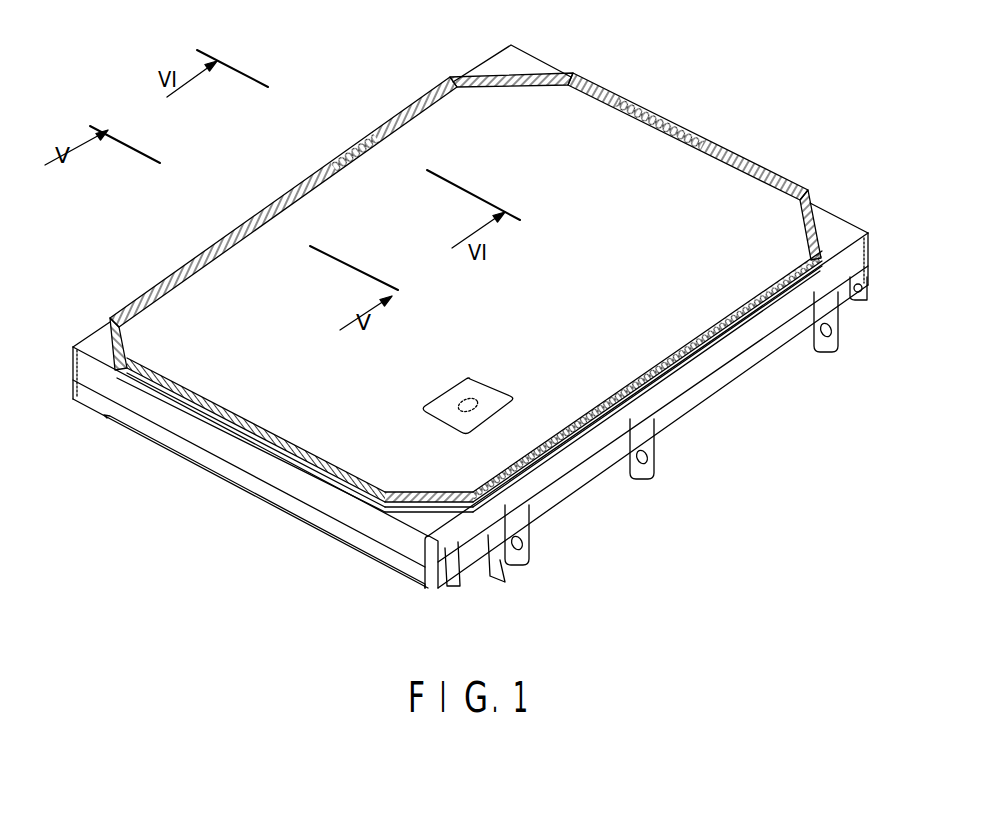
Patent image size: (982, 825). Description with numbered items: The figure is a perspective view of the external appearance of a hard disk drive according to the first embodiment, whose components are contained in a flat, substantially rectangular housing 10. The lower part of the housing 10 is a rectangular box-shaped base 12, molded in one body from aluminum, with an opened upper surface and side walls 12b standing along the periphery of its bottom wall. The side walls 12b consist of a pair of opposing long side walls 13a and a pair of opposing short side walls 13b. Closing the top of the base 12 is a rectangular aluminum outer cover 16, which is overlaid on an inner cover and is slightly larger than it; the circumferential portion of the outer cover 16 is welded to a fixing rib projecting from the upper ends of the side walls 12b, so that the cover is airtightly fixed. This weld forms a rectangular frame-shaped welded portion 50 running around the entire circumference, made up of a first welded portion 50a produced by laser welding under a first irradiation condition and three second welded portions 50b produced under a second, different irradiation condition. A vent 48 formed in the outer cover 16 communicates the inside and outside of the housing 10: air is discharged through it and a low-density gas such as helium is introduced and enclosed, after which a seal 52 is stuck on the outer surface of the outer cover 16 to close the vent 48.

The housing 10 is at (302, 115).
The base 12 is at (703, 416).
The side walls 12b is at (577, 501).
The long side walls 13a is at (760, 381).
The short side walls 13b is at (270, 494).
The outer cover 16 is at (163, 270).
The vent 48 is at (453, 413).
The welded portion 50 is at (818, 122).
The first welded portion 50a is at (303, 181).
The second welded portions 50b is at (362, 122).
The seal 52 is at (484, 388).